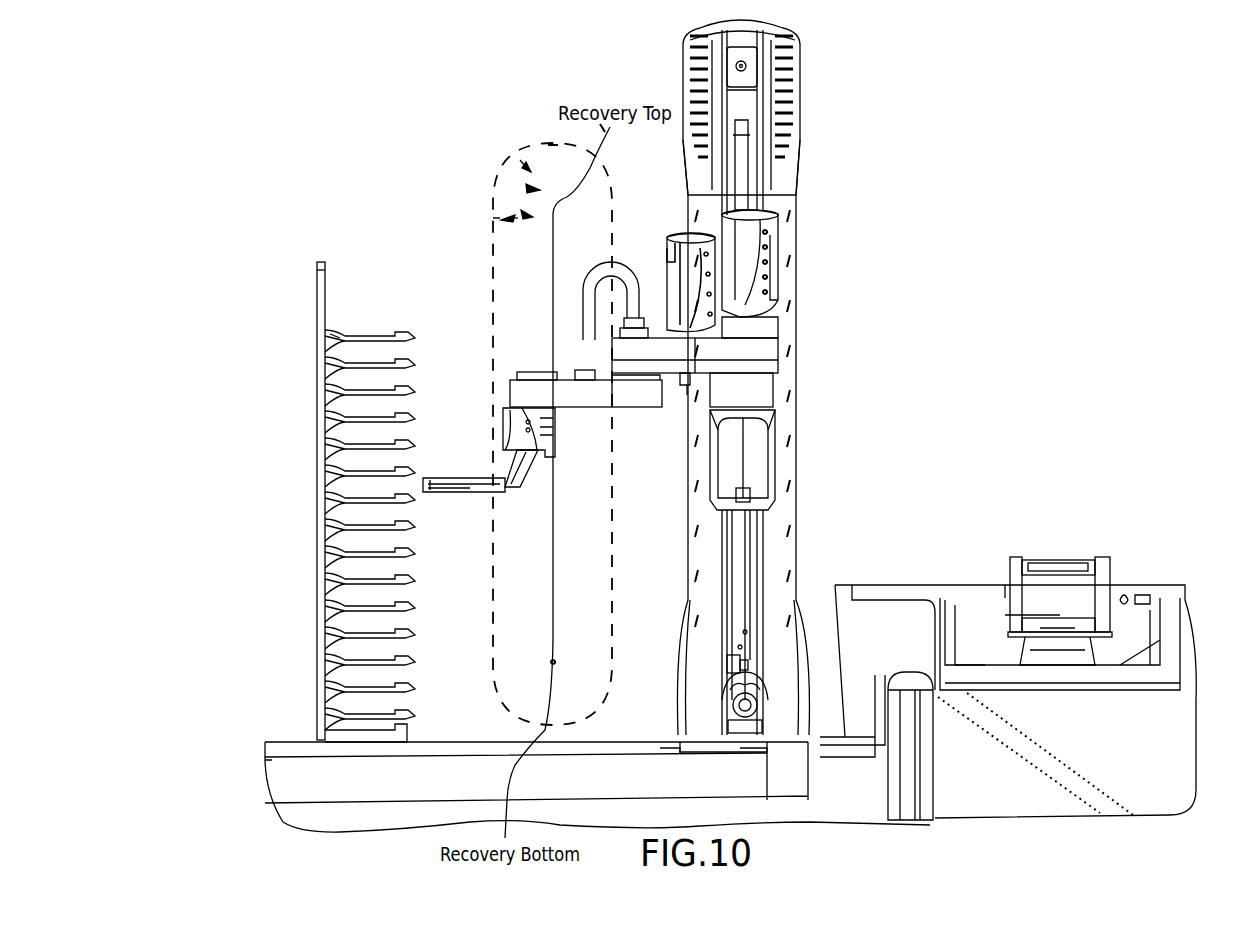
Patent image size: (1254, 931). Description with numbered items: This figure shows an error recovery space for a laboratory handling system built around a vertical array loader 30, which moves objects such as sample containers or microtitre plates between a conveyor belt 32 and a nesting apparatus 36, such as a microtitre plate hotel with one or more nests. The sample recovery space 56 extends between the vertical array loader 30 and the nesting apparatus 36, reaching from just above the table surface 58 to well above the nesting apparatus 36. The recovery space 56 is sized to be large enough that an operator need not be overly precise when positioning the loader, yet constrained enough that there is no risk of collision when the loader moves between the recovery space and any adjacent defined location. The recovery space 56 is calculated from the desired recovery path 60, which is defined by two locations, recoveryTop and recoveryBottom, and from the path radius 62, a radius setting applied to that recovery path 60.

The vertical array loader 30 is at (822, 130).
The conveyor belt 32 is at (1117, 549).
The nesting apparatus 36 is at (304, 311).
The sample recovery space 56 is at (553, 146).
The table surface 58 is at (475, 740).
The recovery path 60 is at (552, 331).
The path radius 62 is at (528, 212).